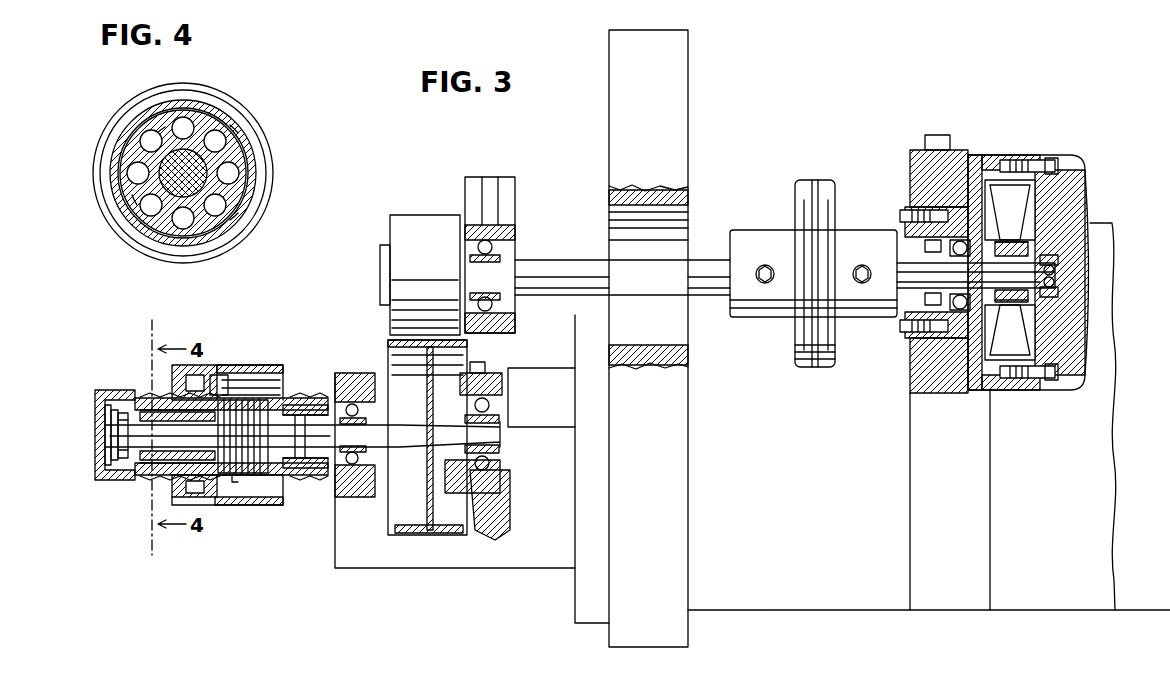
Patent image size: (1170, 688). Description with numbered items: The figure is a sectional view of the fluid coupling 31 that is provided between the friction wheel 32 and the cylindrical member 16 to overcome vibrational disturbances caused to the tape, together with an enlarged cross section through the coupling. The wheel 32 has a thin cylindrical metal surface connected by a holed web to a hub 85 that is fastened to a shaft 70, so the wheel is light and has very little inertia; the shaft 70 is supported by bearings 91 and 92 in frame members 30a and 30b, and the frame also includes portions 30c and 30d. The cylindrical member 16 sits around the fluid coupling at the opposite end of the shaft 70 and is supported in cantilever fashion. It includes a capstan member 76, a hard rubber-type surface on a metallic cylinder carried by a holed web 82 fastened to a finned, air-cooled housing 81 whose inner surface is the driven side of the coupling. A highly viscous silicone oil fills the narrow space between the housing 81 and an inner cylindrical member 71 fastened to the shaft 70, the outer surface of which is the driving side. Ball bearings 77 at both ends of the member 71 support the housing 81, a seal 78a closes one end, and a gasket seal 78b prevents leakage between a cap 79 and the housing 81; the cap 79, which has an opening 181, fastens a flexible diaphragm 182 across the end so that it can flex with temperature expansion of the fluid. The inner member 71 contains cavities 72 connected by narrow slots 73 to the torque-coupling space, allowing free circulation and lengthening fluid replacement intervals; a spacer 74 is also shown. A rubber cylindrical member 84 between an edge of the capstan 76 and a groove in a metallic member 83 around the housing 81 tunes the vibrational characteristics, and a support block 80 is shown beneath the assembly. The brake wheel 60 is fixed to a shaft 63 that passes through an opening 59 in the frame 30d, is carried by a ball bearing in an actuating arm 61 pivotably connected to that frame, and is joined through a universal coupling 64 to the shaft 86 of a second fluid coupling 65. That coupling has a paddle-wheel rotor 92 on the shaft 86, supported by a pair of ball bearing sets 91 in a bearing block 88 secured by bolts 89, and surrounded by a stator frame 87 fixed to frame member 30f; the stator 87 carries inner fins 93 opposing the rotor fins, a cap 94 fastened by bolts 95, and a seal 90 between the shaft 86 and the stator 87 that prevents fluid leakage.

In FIG. 3, the cylindrical member 16 is at (235, 523).
In FIG. 3, the frame member 30a is at (347, 548).
In FIG. 3, the frame member 30b is at (498, 373).
In FIG. 3, the frame base 30c is at (790, 602).
In FIG. 3, the frame 30d is at (686, 453).
In FIG. 3, the frame member 30f is at (925, 380).
In FIG. 3, the fluid coupling 31 is at (138, 363).
In FIG. 3, the friction wheel 32 is at (390, 350).
In FIG. 3, the opening 59 is at (668, 330).
In FIG. 3, the brake wheel 60 is at (420, 220).
In FIG. 3, the actuating arm 61 is at (508, 200).
In FIG. 3, the shaft 63 is at (582, 262).
In FIG. 3, the universal coupling 64 is at (816, 166).
In FIG. 3, the fluid coupling 65 is at (1065, 239).
In FIG. 4, the shaft 70 is at (196, 165).
In FIG. 3, the shaft 70 is at (172, 433).
In FIG. 4, the cylindrical member 71 is at (200, 120).
In FIG. 3, the cylindrical member 71 is at (170, 412).
In FIG. 4, the cavities 72 is at (222, 205).
In FIG. 4, the narrow slots 73 is at (232, 178).
In FIG. 4, the spacer 74 is at (243, 162).
In FIG. 3, the capstan member 76 is at (262, 367).
In FIG. 3, the ball bearings 77 is at (130, 395).
In FIG. 3, the seal 78a is at (330, 403).
In FIG. 3, the gasket seal 78b is at (105, 407).
In FIG. 4, the cap 79 is at (108, 217).
In FIG. 3, the cap 79 is at (100, 463).
In FIG. 3, the support block 80 is at (272, 500).
In FIG. 4, the housing 81 is at (228, 215).
In FIG. 3, the housing 81 is at (290, 398).
In FIG. 3, the web 82 is at (232, 484).
In FIG. 3, the metallic member 83 is at (213, 378).
In FIG. 3, the rubber cylindrical member 84 is at (190, 375).
In FIG. 3, the hub 85 is at (428, 455).
In FIG. 3, the shaft 86 is at (900, 268).
In FIG. 3, the stator frame 87 is at (985, 158).
In FIG. 3, the bearing block 88 is at (907, 207).
In FIG. 3, the bolt 89 is at (902, 218).
In FIG. 3, the seal 90 is at (905, 305).
In FIG. 3, the ball bearings 91 is at (1060, 288).
In FIG. 3, the rotor element 92 is at (1020, 208).
In FIG. 3, the fins 93 is at (1035, 218).
In FIG. 3, the cap 94 is at (1085, 233).
In FIG. 3, the bolts 95 is at (1050, 165).
In FIG. 3, the opening 181 is at (97, 440).
In FIG. 3, the flexible diaphragm 182 is at (108, 425).